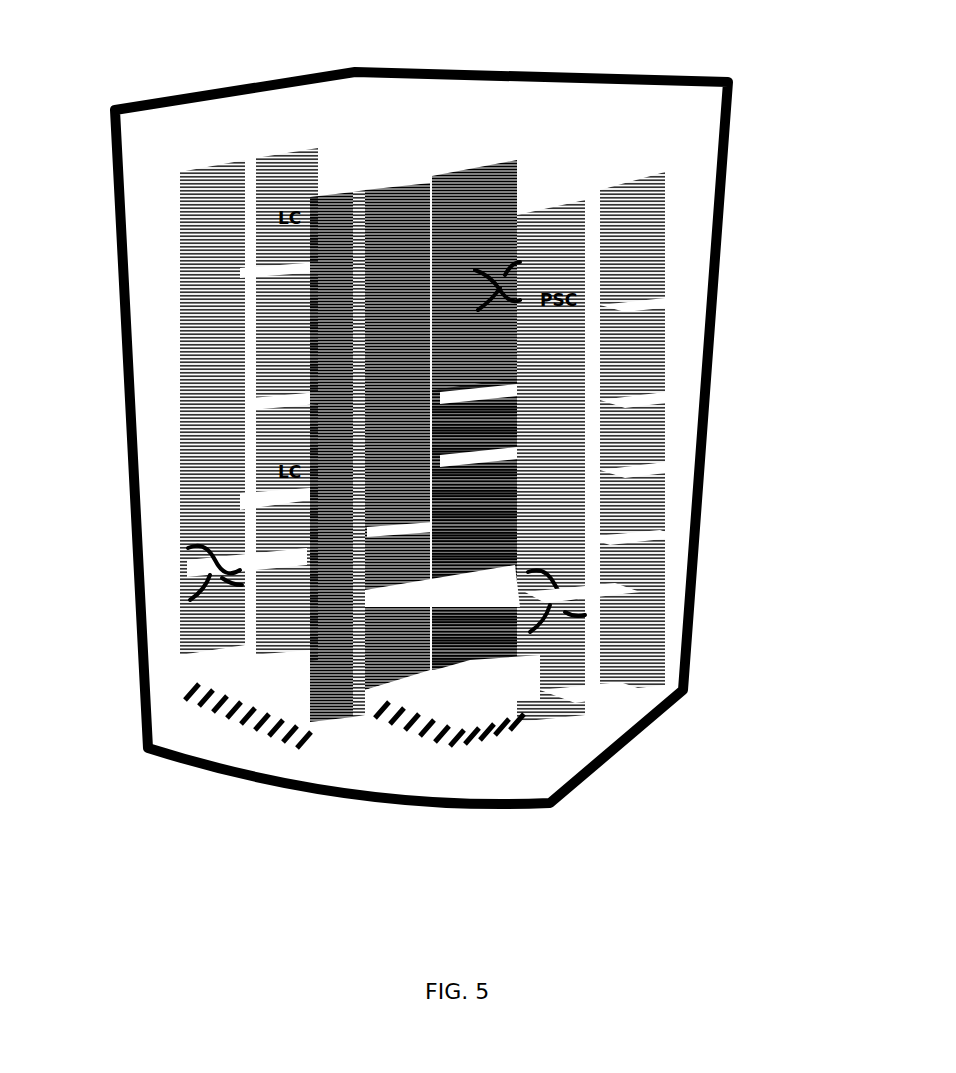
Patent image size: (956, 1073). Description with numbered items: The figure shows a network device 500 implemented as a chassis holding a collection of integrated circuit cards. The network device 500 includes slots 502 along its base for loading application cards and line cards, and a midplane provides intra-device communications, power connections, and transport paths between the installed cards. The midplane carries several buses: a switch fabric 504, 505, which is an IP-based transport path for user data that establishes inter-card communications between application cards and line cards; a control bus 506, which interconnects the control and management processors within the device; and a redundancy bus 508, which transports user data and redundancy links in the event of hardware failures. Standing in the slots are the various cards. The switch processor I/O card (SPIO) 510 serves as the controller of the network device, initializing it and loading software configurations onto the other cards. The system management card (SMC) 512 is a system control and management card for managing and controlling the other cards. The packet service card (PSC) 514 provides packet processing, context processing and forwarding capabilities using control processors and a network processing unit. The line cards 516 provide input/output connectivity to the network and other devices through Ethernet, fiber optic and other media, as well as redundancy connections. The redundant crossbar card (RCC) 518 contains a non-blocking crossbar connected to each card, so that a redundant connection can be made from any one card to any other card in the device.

The network device 500 is at (683, 84).
The slots 502 is at (433, 732).
The switch fabric 504 is at (576, 598).
The switch fabric 505 is at (580, 698).
The control bus 506 is at (620, 538).
The redundancy bus 508 is at (662, 305).
The switch processor I/O card (SPIO) 510 is at (518, 185).
The system management card (SMC) 512 is at (390, 195).
The packet service card (PSC) 514 is at (178, 362).
The line cards 516 is at (637, 175).
The redundant crossbar card (RCC) 518 is at (465, 660).